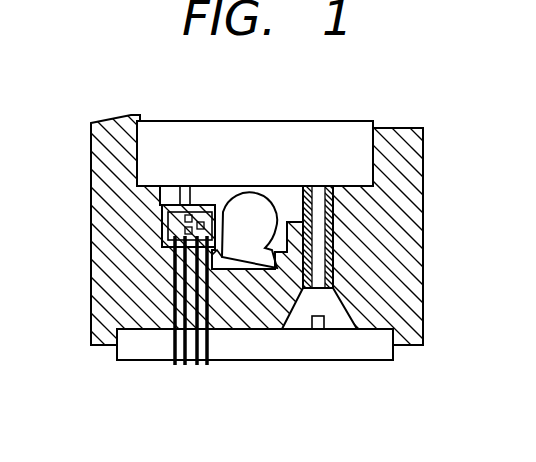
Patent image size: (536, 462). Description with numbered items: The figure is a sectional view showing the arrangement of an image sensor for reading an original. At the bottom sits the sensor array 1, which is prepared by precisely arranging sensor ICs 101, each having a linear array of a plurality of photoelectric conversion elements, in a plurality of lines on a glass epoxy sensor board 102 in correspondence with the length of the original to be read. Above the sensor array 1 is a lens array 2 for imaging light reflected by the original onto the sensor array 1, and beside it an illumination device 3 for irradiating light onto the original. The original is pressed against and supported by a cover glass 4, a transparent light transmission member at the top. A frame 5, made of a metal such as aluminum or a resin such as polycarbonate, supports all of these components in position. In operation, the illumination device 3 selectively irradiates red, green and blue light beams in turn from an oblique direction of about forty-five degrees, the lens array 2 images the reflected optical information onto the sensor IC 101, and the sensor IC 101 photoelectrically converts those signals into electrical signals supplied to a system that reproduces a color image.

The sensor array 1 is at (232, 355).
The lens array 2 is at (320, 206).
The illumination device 3 is at (259, 213).
The cover glass 4 is at (188, 121).
The frame 5 is at (92, 198).
The sensor IC 101 is at (322, 331).
The sensor board 102 is at (327, 358).